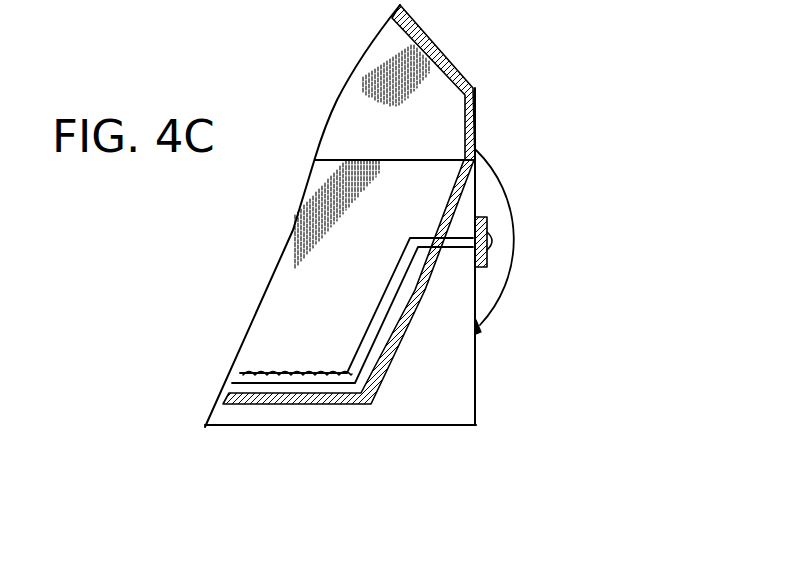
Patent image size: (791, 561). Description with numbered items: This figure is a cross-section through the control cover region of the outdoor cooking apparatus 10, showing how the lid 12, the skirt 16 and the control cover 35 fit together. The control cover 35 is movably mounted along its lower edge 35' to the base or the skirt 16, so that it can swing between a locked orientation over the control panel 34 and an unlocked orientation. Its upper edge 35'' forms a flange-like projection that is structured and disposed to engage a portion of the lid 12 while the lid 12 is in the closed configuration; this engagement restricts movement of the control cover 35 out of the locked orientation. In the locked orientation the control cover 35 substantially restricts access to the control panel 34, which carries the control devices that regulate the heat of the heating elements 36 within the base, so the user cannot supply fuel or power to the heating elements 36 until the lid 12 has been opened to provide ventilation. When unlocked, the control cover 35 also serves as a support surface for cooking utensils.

The outdoor cooking apparatus 10 is at (553, 109).
The lid 12 is at (452, 67).
The skirt 16 is at (443, 427).
The control panel 34 is at (488, 219).
The control cover 35 is at (423, 277).
The lower edge 35' is at (536, 352).
The upper edge 35'' is at (391, 138).
The heating element 36 is at (266, 371).